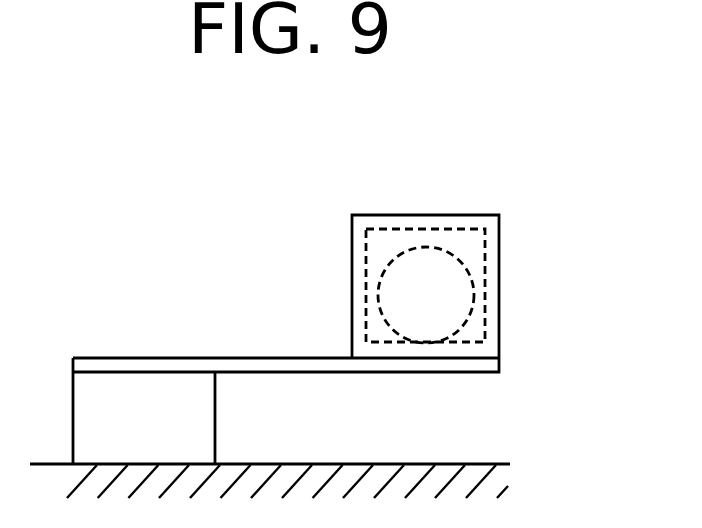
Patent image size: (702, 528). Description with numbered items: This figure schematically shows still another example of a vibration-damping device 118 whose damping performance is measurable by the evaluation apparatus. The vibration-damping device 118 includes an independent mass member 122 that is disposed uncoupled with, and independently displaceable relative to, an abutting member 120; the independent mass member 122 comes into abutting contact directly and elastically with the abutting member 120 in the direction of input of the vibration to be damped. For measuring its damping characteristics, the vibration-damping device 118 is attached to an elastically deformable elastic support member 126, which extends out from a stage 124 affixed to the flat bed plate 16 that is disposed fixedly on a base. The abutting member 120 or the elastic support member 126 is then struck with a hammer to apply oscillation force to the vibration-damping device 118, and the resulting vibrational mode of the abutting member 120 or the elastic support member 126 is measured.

The bed plate 16 is at (470, 480).
The vibration-damping device 118 is at (505, 288).
The abutting member 120 is at (493, 242).
The independent mass member 122 is at (392, 272).
The stage 124 is at (182, 419).
The elastic support member 126 is at (243, 363).